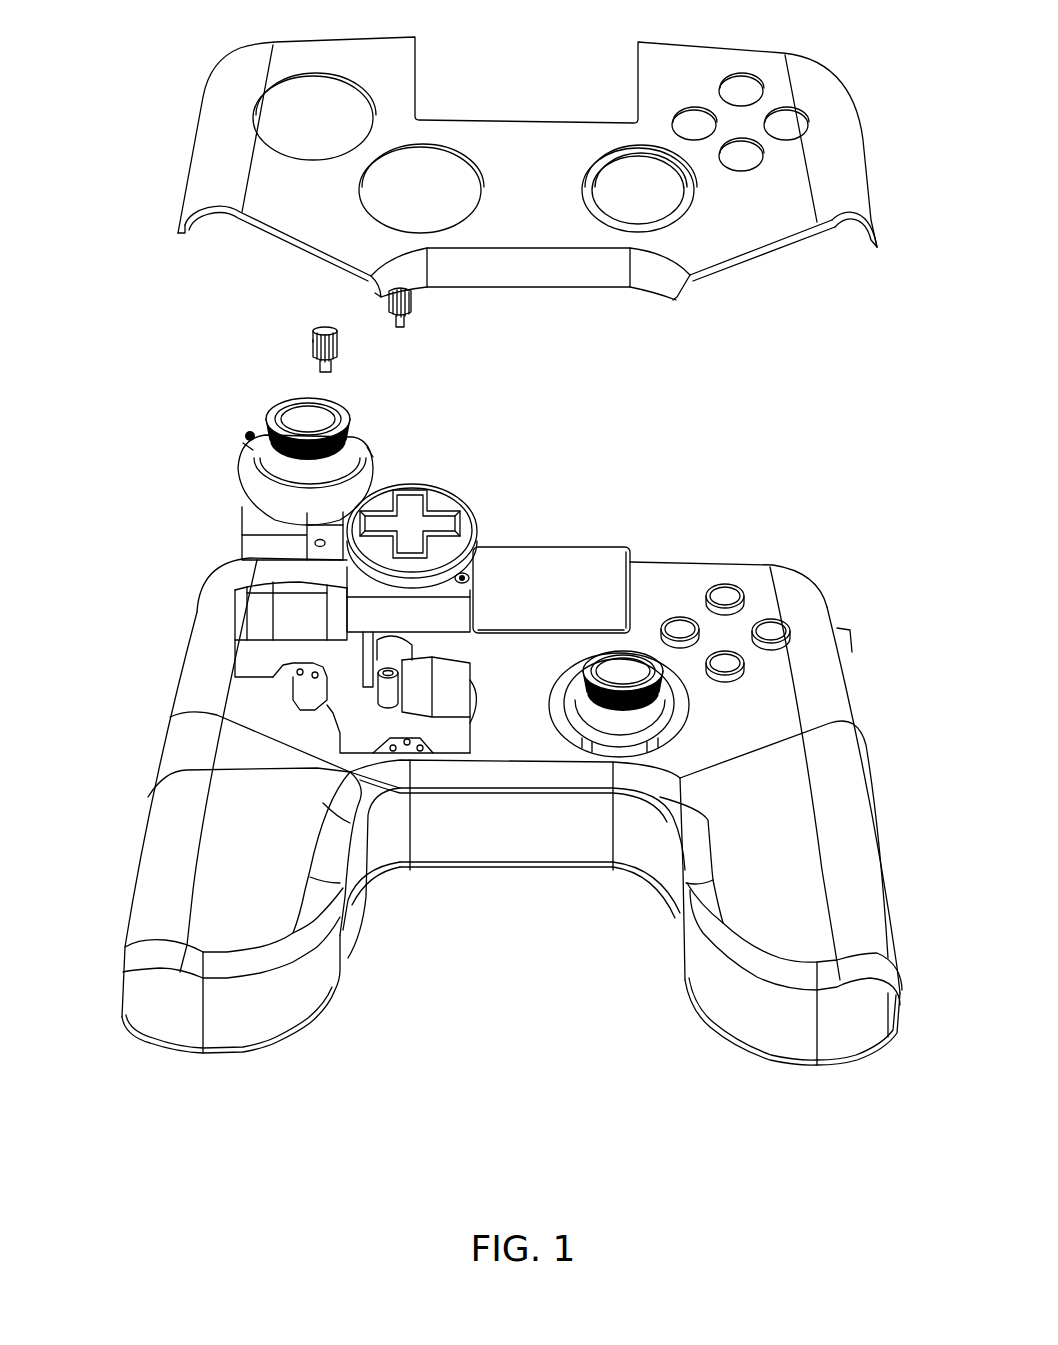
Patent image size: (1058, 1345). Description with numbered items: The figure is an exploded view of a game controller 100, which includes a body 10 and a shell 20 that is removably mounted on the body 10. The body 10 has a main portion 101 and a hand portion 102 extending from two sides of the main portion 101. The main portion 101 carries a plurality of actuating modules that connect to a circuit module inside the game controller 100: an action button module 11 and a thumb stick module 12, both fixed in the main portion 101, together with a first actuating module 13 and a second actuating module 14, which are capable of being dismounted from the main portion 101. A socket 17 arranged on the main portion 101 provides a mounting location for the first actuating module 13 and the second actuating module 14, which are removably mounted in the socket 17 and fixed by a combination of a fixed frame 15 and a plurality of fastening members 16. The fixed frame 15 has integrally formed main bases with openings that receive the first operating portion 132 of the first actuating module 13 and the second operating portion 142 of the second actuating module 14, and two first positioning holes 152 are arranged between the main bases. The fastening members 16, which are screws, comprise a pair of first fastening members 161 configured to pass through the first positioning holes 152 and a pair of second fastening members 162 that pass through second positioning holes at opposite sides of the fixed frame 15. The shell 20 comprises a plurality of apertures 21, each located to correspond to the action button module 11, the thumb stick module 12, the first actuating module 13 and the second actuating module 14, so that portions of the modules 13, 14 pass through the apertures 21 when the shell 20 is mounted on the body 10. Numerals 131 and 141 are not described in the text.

The game controller 100 is at (42, 50).
The body 10 is at (858, 655).
The main portion 101 is at (828, 697).
The hand portion 102 is at (175, 850).
The action button module 11 is at (726, 598).
The thumb stick module 12 is at (652, 676).
The first actuating module 13 is at (130, 435).
The bracket base 131 is at (245, 512).
The first operating portion 132 is at (243, 450).
The second actuating module 14 is at (575, 455).
The direction pad housing 141 is at (478, 514).
The second operating portion 142 is at (440, 498).
The fixed frame 15 is at (358, 460).
The first positioning holes 152 is at (314, 543).
The fastening members 16 is at (193, 390).
The first fastening members 161 is at (413, 315).
The second fastening members 162 is at (250, 433).
The socket 17 is at (235, 640).
The shell 20 is at (838, 190).
The apertures 21 is at (262, 109).